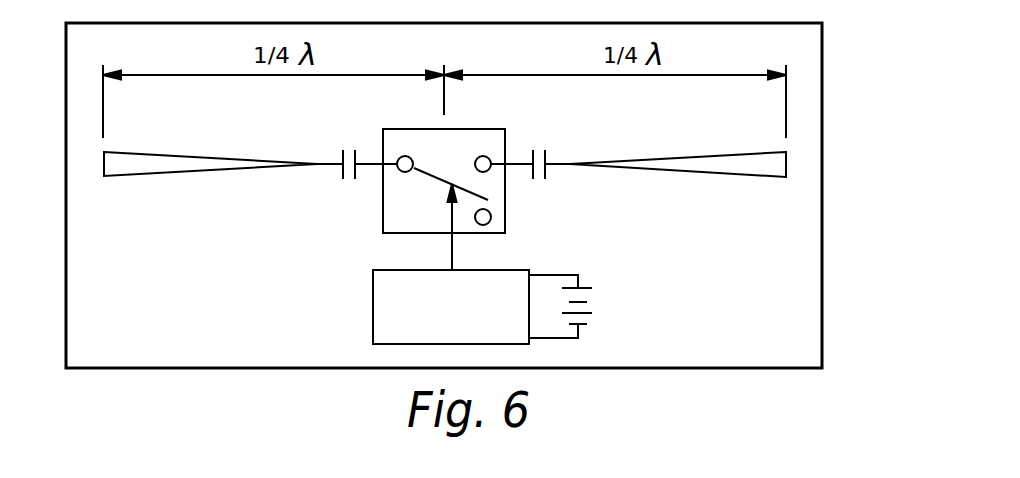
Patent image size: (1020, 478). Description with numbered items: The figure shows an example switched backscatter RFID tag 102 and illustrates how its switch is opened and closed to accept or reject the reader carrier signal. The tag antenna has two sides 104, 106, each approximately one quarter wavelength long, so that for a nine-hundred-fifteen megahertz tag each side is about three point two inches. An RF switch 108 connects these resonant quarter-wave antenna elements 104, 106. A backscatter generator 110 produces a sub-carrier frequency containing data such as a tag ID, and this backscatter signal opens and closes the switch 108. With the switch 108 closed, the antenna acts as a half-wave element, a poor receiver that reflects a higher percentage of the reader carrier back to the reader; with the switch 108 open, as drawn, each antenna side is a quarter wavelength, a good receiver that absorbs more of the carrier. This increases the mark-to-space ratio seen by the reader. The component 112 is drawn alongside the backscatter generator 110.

The switched backscatter RFID tag 102 is at (675, 368).
The antenna side 104 is at (145, 158).
The antenna side 106 is at (740, 150).
The RF switch 108 is at (505, 185).
The backscatter generator 110 is at (373, 308).
The battery 112 is at (598, 303).